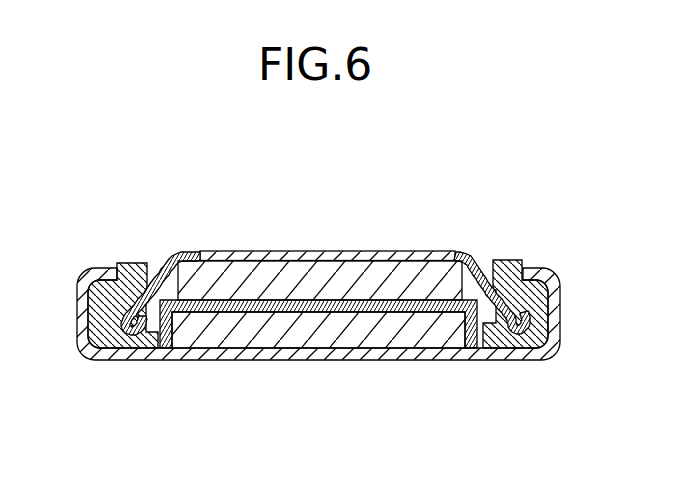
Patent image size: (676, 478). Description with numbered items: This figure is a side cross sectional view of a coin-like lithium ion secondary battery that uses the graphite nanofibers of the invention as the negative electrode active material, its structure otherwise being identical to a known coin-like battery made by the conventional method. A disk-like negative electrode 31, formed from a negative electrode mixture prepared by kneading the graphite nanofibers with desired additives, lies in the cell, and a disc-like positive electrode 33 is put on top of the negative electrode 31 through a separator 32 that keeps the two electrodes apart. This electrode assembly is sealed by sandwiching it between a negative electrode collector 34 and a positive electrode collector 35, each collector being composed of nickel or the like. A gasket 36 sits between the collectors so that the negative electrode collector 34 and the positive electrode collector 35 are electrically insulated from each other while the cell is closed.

The negative electrode 31 is at (224, 272).
The separator 32 is at (402, 300).
The positive electrode 33 is at (277, 342).
The negative electrode collector 34 is at (292, 258).
The positive electrode collector 35 is at (400, 355).
The gasket 36 is at (132, 261).